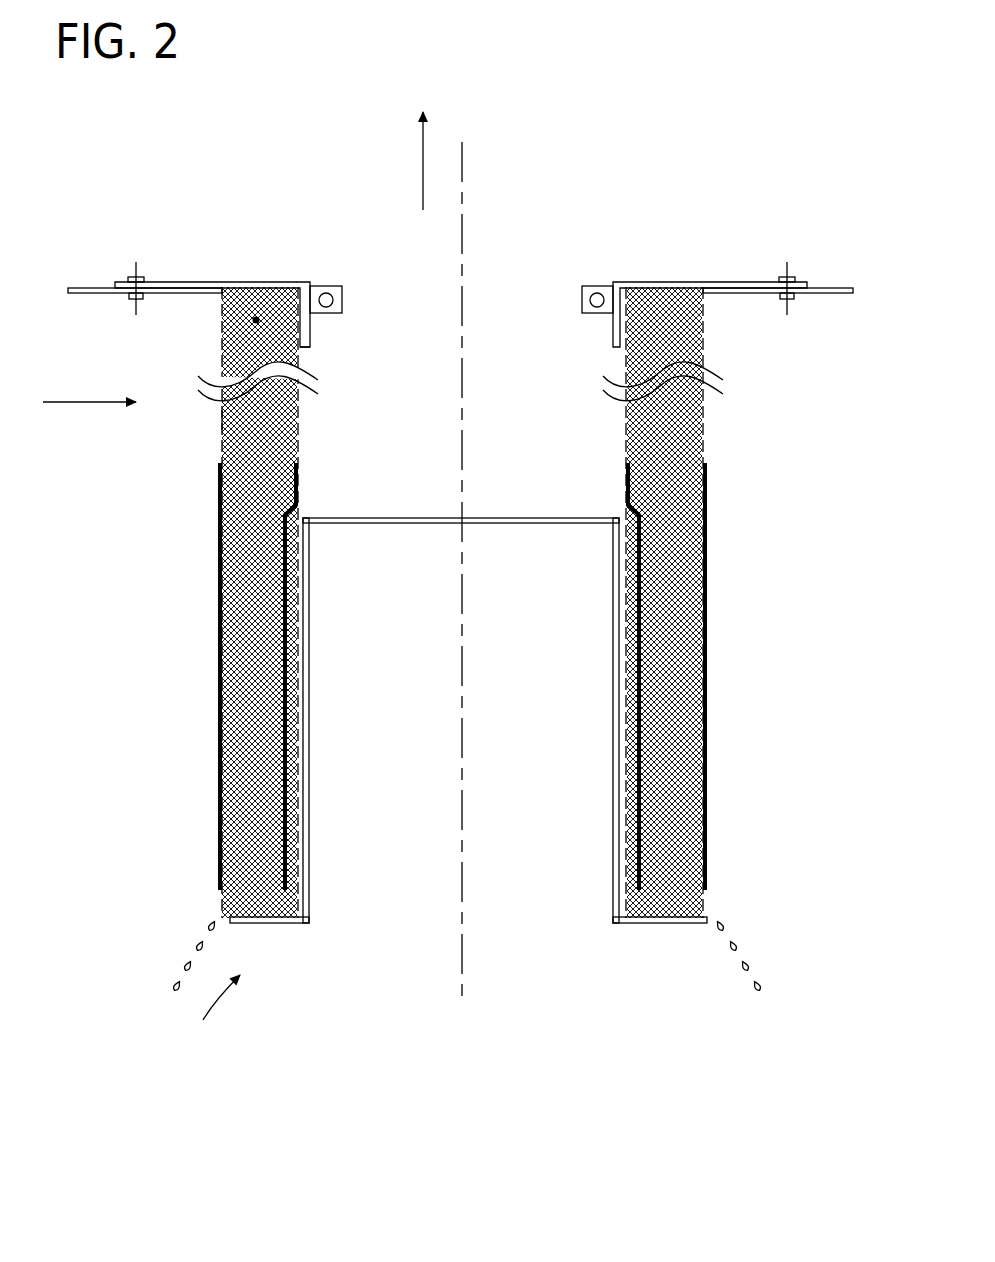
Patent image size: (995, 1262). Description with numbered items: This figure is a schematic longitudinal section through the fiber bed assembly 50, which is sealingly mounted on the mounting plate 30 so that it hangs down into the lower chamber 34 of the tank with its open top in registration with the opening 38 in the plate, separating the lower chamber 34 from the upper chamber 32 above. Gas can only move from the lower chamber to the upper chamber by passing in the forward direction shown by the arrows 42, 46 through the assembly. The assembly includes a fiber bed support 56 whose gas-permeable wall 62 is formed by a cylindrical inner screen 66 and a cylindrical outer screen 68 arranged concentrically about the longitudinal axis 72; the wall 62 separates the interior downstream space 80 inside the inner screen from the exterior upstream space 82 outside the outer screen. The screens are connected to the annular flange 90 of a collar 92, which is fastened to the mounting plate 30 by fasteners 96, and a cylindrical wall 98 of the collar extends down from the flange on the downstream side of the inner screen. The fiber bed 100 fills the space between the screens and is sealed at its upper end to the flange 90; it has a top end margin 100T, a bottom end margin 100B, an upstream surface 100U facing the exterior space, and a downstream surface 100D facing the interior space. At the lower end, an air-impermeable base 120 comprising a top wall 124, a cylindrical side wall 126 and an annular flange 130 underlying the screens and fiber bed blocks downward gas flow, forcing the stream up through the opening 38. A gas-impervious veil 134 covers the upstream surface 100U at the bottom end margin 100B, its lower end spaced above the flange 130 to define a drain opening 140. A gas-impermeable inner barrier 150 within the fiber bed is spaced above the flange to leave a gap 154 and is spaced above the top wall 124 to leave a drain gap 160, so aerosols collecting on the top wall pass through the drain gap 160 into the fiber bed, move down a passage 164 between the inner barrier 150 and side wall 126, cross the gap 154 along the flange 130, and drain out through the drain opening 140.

The mounting plate 30 is at (92, 288).
The upper chamber 32 is at (155, 226).
The lower chamber 34 is at (91, 557).
The opening 38 is at (398, 290).
The gas stream 42 is at (80, 402).
The gas stream 46 is at (423, 160).
The fiber bed assembly 50 is at (214, 1037).
The fiber bed support 56 is at (705, 345).
The gas-permeable wall 62 is at (705, 430).
The inner screen 66 is at (618, 428).
The outer screen 68 is at (788, 421).
The longitudinal axis 72 is at (466, 180).
The interior downstream space 80 is at (408, 433).
The exterior upstream space 82 is at (173, 537).
The annular flange 90 is at (640, 287).
The collar 92 is at (613, 282).
The fasteners 96 is at (787, 282).
The cylindrical wall 98 is at (613, 333).
The fiber bed 100 is at (668, 662).
The top end margin 100T is at (254, 320).
The downstream surface 100D is at (311, 347).
The upstream surface 100U is at (222, 418).
The bottom end margin 100B is at (262, 653).
The base 120 is at (600, 885).
The top wall 124 is at (388, 526).
The side wall 126 is at (309, 837).
The annular flange 130 is at (663, 923).
The veil 134 is at (218, 767).
The drain opening 140 is at (222, 915).
The inner barrier 150 is at (281, 703).
The gap 154 is at (277, 903).
The drain gap 160 is at (296, 512).
The passage 164 is at (290, 693).